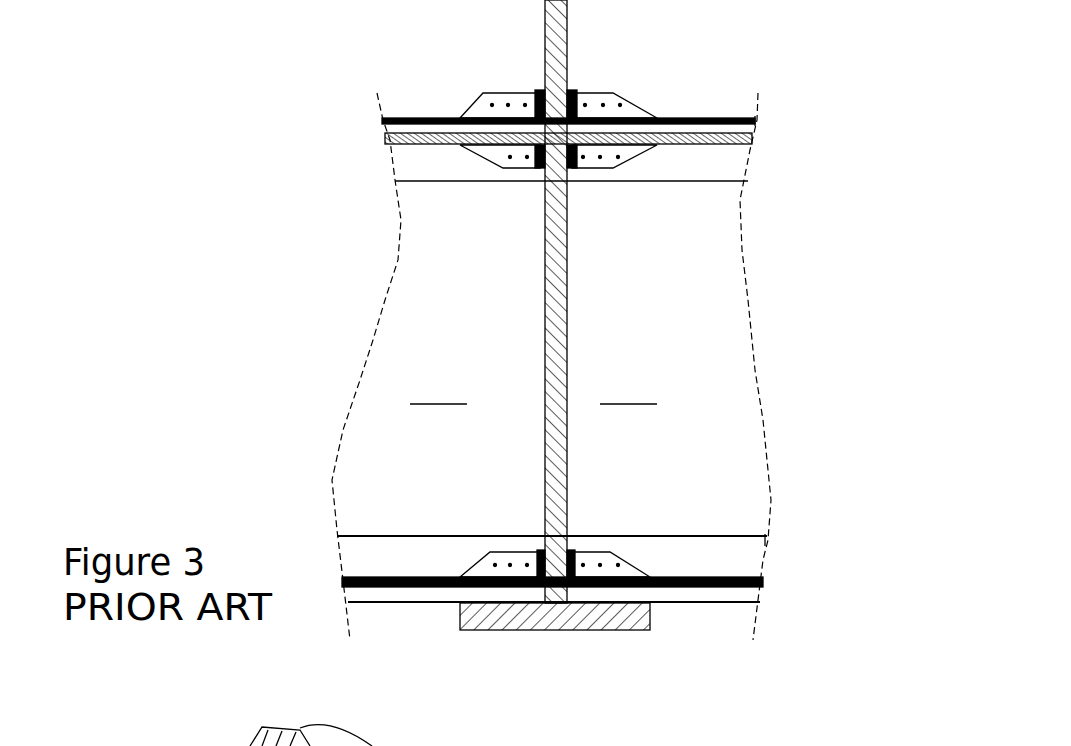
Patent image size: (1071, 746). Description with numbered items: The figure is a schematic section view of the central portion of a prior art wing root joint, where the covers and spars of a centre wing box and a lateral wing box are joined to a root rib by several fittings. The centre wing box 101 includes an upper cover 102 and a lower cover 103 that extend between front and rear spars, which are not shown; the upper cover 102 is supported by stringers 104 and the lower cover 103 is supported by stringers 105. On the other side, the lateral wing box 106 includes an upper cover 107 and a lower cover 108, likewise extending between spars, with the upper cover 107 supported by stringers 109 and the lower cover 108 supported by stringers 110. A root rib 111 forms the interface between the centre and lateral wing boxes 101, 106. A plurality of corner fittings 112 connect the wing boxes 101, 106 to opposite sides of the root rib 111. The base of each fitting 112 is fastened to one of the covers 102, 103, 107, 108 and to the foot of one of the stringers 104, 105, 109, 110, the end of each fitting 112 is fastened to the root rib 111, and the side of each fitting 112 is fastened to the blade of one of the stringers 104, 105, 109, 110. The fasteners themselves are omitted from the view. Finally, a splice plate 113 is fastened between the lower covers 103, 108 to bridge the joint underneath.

The centre wing box 101 is at (628, 387).
The upper cover 102 is at (707, 118).
The lower cover 103 is at (728, 593).
The stringers 104 is at (718, 152).
The stringers 105 is at (730, 558).
The lateral wing box 106 is at (438, 387).
The upper cover 107 is at (407, 118).
The lower cover 108 is at (393, 595).
The stringers 109 is at (407, 152).
The stringers 110 is at (370, 560).
The root rib 111 is at (557, 323).
The corner fittings 112 is at (507, 93).
The splice plate 113 is at (597, 610).